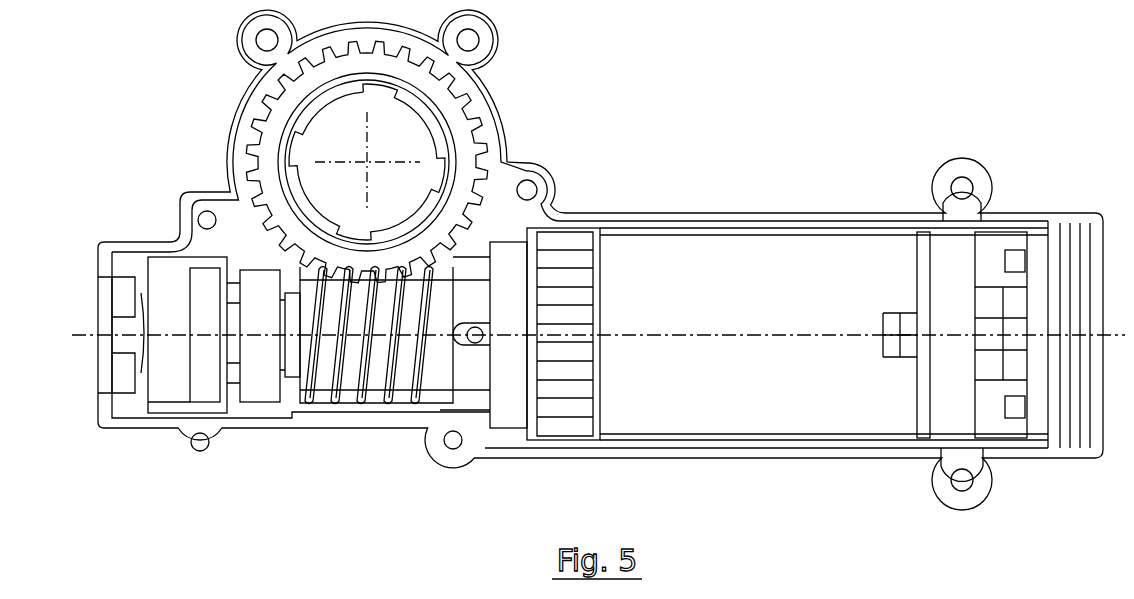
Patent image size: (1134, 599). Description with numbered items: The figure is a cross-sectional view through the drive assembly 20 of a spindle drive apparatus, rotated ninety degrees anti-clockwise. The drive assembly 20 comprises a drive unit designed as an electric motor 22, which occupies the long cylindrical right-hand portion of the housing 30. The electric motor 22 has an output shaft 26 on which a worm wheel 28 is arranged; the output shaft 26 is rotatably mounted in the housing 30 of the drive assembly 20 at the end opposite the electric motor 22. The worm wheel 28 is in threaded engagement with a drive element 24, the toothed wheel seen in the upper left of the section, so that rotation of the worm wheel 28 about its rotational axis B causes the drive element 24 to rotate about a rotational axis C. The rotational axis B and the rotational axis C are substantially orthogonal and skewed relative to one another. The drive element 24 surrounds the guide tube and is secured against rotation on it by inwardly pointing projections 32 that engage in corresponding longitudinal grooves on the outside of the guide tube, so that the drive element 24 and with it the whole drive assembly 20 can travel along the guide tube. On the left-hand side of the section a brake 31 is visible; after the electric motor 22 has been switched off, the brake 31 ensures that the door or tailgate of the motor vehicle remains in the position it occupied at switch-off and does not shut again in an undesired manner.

The drive assembly 20 is at (770, 70).
The electric motor 22 is at (808, 307).
The drive element 24 is at (472, 152).
The output shaft 26 is at (245, 272).
The worm wheel 28 is at (295, 313).
The housing 30 is at (735, 207).
The brake 31 is at (172, 297).
The inwardly pointing projections 32 is at (420, 120).
The rotational axis B is at (83, 330).
The rotational axis C is at (365, 160).